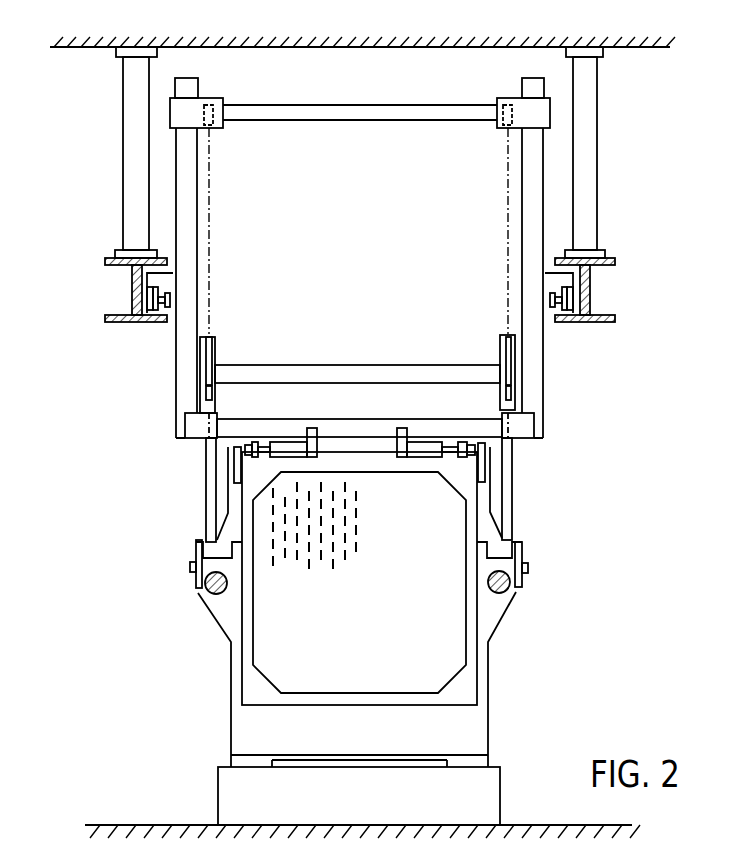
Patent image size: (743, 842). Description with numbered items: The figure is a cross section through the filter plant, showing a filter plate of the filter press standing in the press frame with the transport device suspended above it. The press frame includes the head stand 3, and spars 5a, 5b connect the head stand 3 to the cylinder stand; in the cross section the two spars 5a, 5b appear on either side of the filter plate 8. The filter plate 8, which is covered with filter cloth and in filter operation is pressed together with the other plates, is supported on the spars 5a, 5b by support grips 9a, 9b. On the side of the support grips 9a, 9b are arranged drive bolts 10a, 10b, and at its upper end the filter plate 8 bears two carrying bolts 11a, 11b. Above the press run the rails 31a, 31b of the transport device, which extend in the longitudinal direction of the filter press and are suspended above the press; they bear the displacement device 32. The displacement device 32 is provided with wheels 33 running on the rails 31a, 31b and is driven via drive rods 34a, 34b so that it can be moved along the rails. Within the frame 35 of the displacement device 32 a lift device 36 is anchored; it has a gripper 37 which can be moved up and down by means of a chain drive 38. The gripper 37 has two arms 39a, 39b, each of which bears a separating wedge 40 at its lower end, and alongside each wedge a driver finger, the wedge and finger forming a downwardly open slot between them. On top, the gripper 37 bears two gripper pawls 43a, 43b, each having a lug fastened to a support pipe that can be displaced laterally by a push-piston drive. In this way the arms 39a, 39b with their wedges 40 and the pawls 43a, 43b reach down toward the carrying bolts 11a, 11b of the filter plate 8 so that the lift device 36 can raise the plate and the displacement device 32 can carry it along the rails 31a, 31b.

The head stand 3 is at (240, 728).
The spar 5a is at (500, 596).
The spar 5b is at (215, 587).
The filter plate 8 is at (270, 672).
The support grip 9a is at (522, 548).
The support grip 9b is at (200, 548).
The drive bolt 10a is at (528, 565).
The drive bolt 10b is at (192, 565).
The carrying bolt 11a is at (508, 460).
The carrying bolt 11b is at (228, 468).
The rail 31a is at (612, 256).
The rail 31b is at (112, 255).
The displacement device 32 is at (560, 192).
The wheel 33 is at (136, 292).
The drive rod 34a is at (547, 286).
The drive rod 34b is at (175, 288).
The frame 35 is at (535, 152).
The lift device 36 is at (200, 360).
The gripper 37 is at (382, 370).
The chain drive 38 is at (210, 204).
The arm 39a is at (516, 465).
The arm 39b is at (210, 455).
The separating wedge 40 is at (192, 578).
The gripper pawl 43a is at (477, 447).
The gripper pawl 43b is at (238, 462).